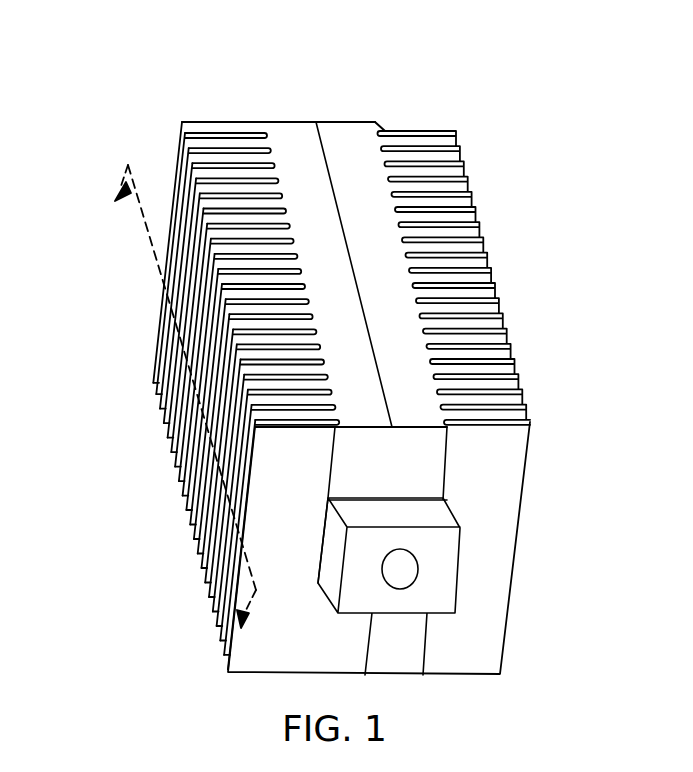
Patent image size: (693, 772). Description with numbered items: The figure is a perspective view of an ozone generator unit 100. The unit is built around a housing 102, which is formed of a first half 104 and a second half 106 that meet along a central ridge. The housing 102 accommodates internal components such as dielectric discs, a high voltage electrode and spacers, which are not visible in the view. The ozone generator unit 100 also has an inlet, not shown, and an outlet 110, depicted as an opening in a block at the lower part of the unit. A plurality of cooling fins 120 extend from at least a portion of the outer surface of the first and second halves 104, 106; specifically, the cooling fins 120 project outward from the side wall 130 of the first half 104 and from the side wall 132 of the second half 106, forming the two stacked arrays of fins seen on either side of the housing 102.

The ozone generator unit 100 is at (553, 90).
The housing 102 is at (318, 122).
The first half 104 is at (290, 143).
The second half 106 is at (353, 140).
The outlet 110 is at (418, 567).
The cooling fins 120 is at (200, 277).
The side wall 130 is at (330, 458).
The side wall 132 is at (447, 458).